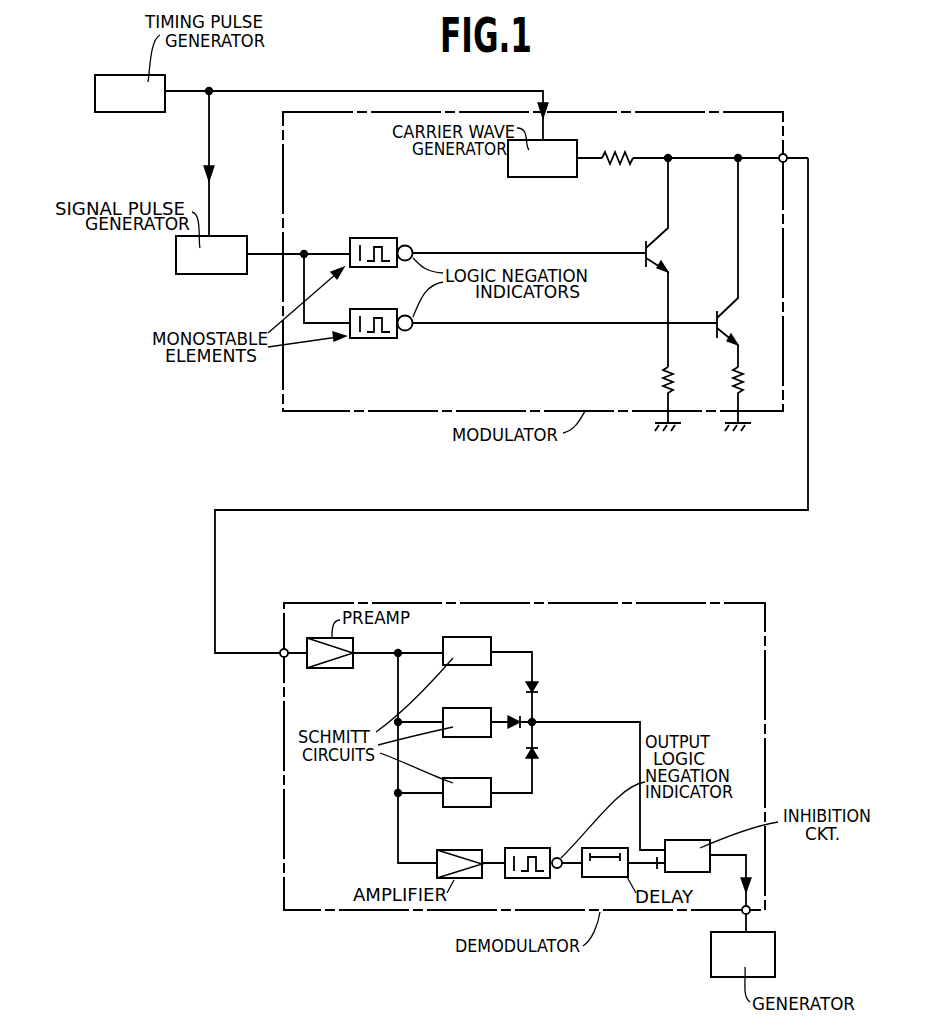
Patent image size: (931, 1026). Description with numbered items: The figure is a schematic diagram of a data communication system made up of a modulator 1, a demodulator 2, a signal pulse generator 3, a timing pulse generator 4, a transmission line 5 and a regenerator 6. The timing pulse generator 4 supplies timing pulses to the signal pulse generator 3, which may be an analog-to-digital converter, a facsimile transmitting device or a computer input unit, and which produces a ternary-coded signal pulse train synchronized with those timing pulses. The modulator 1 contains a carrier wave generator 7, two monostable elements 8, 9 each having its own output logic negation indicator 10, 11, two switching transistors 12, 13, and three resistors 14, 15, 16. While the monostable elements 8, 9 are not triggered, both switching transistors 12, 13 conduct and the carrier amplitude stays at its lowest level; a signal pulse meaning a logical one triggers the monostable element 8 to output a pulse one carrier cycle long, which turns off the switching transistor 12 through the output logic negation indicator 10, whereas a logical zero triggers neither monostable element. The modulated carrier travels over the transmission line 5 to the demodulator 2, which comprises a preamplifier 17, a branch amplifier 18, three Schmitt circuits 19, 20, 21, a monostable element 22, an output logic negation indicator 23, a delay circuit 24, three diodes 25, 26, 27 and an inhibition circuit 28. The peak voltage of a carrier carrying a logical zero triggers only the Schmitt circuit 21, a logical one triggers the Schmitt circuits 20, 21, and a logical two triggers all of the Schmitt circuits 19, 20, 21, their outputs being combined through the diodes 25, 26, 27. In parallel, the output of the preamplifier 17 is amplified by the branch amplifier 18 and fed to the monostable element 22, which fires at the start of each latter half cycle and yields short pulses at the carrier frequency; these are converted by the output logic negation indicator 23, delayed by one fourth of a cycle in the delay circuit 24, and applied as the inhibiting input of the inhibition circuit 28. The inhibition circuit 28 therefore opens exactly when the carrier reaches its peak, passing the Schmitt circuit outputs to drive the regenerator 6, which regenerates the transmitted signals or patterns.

The modulator 1 is at (364, 422).
The demodulator 2 is at (486, 598).
The signal pulse generator 3 is at (207, 274).
The timing pulse generator 4 is at (125, 112).
The transmission line 5 is at (640, 512).
The regenerator 6 is at (712, 961).
The carrier wave generator 7 is at (541, 177).
The monostable element 8 is at (371, 238).
The monostable element 9 is at (370, 309).
The output logic negation indicator 10 is at (406, 245).
The output logic negation indicator 11 is at (406, 315).
The switching transistor 12 is at (645, 262).
The switching transistor 13 is at (715, 262).
The resistor 14 is at (617, 152).
The resistor 15 is at (660, 385).
The resistor 16 is at (744, 383).
The preamplifier 17 is at (328, 669).
The branch amplifier 18 is at (472, 878).
The Schmitt circuit 19 is at (484, 644).
The Schmitt circuit 20 is at (484, 713).
The Schmitt circuit 21 is at (484, 782).
The monostable element 22 is at (529, 848).
The output logic negation indicator 23 is at (557, 868).
The delay circuit 24 is at (608, 877).
The diode 25 is at (539, 686).
The diode 26 is at (536, 716).
The diode 27 is at (541, 753).
The inhibition circuit 28 is at (693, 840).